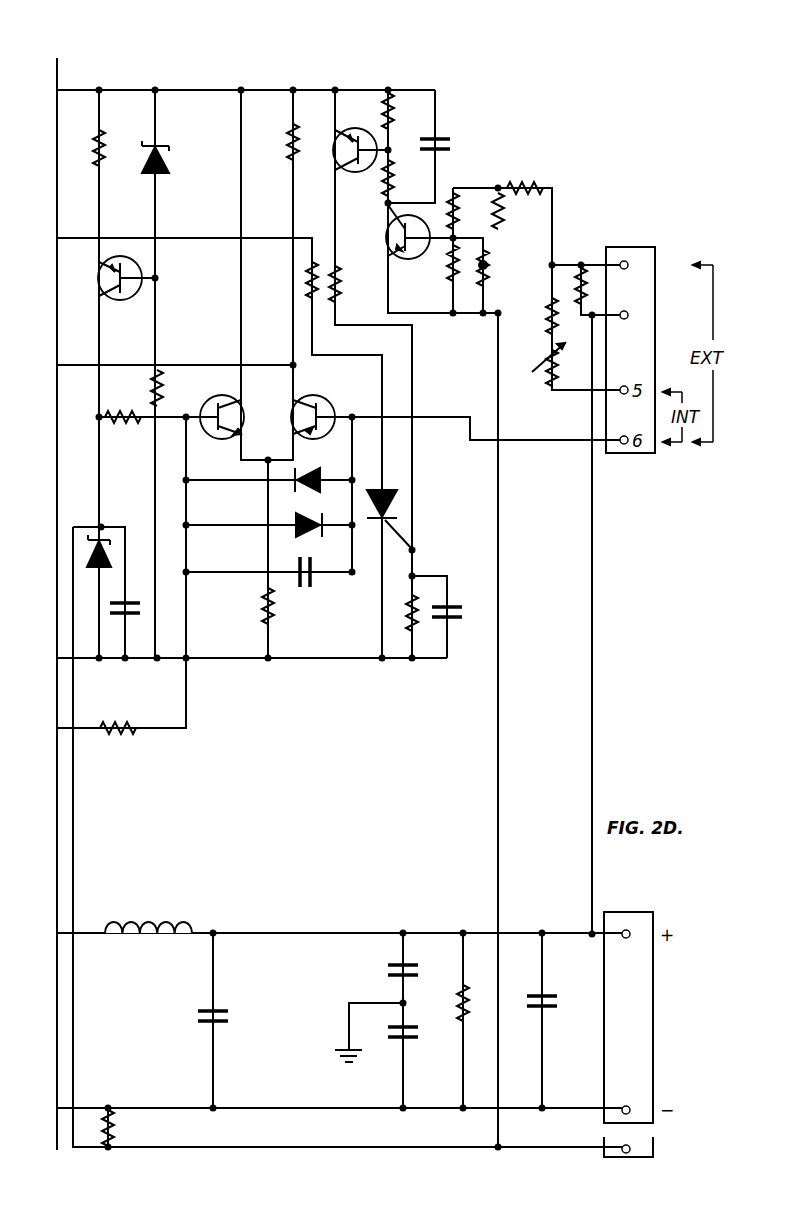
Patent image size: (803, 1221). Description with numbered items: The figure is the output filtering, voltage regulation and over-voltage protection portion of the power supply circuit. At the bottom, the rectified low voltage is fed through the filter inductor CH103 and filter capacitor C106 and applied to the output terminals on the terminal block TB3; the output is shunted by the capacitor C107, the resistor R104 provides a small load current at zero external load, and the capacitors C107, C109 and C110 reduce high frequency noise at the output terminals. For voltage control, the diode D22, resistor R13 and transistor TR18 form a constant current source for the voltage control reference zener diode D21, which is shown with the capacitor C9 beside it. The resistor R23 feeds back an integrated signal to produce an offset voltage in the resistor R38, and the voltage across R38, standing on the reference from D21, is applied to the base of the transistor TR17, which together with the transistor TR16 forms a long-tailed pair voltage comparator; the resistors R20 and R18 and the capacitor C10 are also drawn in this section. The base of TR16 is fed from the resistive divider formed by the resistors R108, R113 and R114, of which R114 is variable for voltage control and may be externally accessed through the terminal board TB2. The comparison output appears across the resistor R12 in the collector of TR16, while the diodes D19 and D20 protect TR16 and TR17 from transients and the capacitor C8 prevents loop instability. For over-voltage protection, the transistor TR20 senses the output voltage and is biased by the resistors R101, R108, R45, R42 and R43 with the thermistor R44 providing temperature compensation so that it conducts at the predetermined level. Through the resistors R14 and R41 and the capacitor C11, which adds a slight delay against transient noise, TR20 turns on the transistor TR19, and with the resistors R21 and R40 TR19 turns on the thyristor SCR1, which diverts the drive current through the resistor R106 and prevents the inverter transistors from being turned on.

The resistor R13 is at (99, 140).
The diode D22 is at (163, 158).
The transistor TR18 is at (123, 300).
The resistor R12 is at (292, 128).
The resistor R14 is at (387, 102).
The transistor TR19 is at (357, 173).
The capacitor C11 is at (449, 143).
The resistor R41 is at (394, 187).
The resistor R106 is at (306, 290).
The resistor R40 is at (340, 288).
The transistor TR20 is at (405, 262).
The resistor R42 is at (457, 203).
The resistor R43 is at (451, 262).
The thermistor R44 is at (487, 267).
The resistor R45 is at (503, 212).
The resistor R108 is at (531, 184).
The resistor R101 is at (578, 275).
The resistor R113 is at (548, 314).
The variable resistor R114 is at (549, 369).
The terminal board TB2 is at (633, 246).
The resistor R20 is at (163, 386).
The resistor R38 is at (128, 399).
The transistor TR17 is at (217, 440).
The transistor TR16 is at (332, 387).
The diode D19 is at (295, 488).
The diode D20 is at (296, 534).
The capacitor C8 is at (310, 581).
The resistor R18 is at (262, 619).
The thyristor SCR1 is at (397, 508).
The resistor R21 is at (407, 610).
The capacitor C10 is at (452, 623).
The zener diode D21 is at (109, 538).
The capacitor C9 is at (127, 616).
The resistor R23 is at (120, 722).
The filter inductor CH103 is at (145, 924).
The filter capacitor C106 is at (230, 1017).
The capacitor C109 is at (392, 966).
The capacitor C110 is at (408, 1041).
The resistor R104 is at (461, 1006).
The capacitor C107 is at (548, 996).
The terminal block TB3 is at (636, 911).